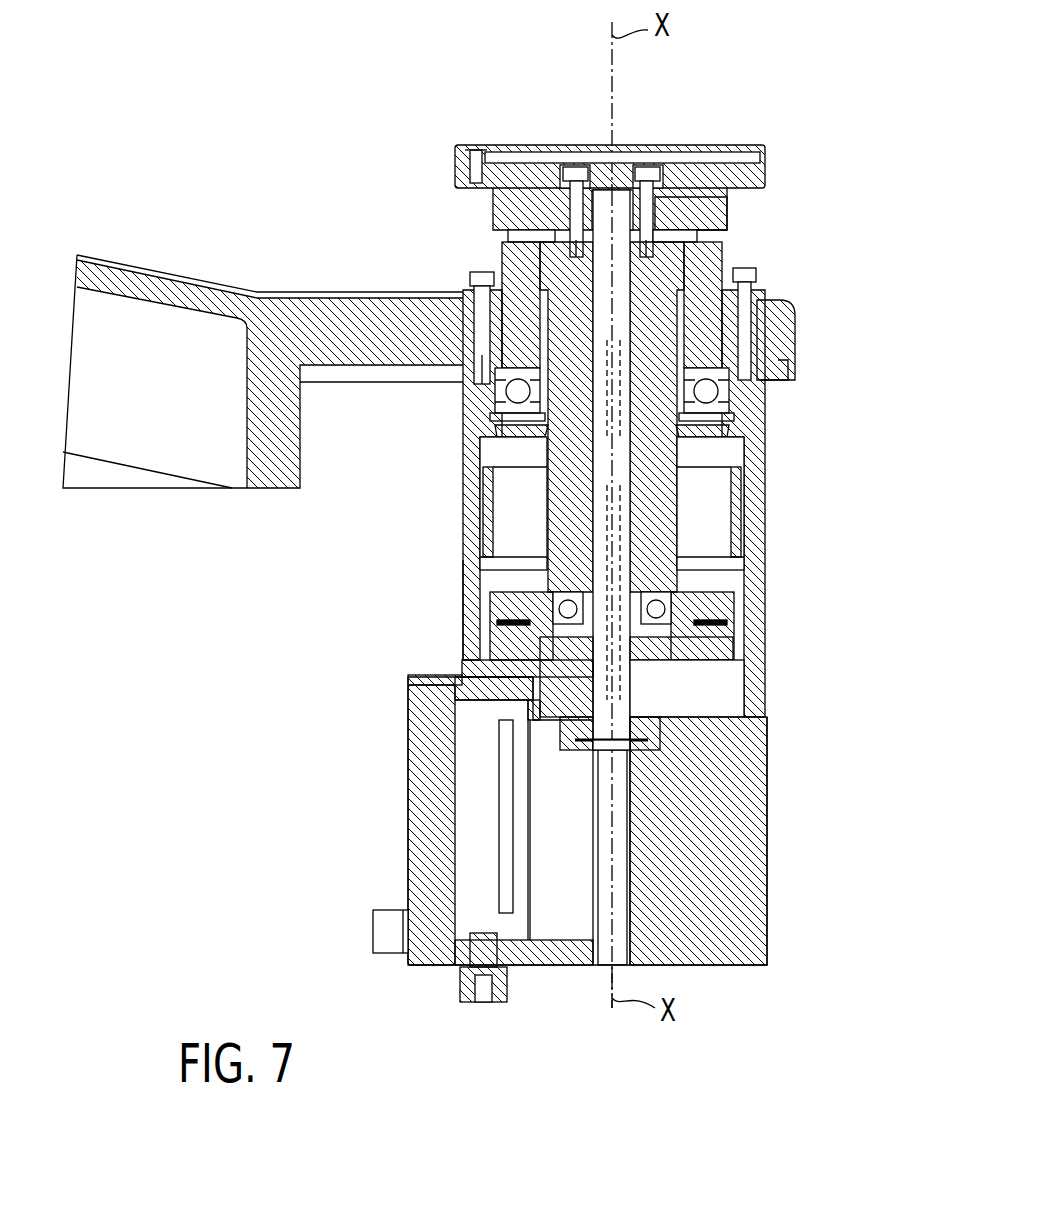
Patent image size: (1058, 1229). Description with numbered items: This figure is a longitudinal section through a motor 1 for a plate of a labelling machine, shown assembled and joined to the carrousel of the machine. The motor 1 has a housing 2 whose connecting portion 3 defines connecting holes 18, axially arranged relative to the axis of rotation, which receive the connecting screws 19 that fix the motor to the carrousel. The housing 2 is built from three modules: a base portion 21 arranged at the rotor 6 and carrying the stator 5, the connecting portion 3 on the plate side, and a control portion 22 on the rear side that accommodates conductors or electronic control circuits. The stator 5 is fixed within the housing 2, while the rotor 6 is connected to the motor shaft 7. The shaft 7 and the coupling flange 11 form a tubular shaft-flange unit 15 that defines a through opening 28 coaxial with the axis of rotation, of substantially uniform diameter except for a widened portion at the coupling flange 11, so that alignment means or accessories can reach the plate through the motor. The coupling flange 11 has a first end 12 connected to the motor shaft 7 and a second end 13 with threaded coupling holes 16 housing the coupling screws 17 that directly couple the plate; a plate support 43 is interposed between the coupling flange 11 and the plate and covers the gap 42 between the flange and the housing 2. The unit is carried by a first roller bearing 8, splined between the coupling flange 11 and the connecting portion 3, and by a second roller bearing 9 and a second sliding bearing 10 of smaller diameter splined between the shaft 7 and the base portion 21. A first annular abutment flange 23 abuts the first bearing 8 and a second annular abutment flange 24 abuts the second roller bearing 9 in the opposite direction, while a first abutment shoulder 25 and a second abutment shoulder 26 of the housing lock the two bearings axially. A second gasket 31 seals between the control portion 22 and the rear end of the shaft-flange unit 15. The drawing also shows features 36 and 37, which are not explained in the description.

The motor 1 is at (413, 560).
The housing 2 is at (758, 566).
The connecting portion 3 is at (757, 368).
The stator 5 is at (502, 505).
The rotor 6 is at (547, 490).
The motor shaft 7 is at (692, 480).
The first bearing 8 is at (512, 393).
The second roller bearing 9 is at (560, 605).
The second sliding bearing 10 is at (560, 678).
The coupling flange 11 is at (622, 232).
The first end 12 is at (525, 433).
The second end 13 is at (716, 228).
The shaft-flange unit 15 is at (553, 463).
The coupling holes 16 is at (504, 150).
The coupling screws 17 is at (569, 146).
The connecting holes 18 is at (742, 347).
The connecting screws 19 is at (741, 318).
The base portion 21 is at (470, 578).
The control portion 22 is at (738, 836).
The first annular abutment flange 23 is at (690, 436).
The second annular abutment flange 24 is at (641, 592).
The first abutment shoulder 25 is at (500, 366).
The second abutment shoulder 26 is at (695, 633).
The through opening 28 is at (625, 479).
The second gasket 31 is at (587, 743).
The slot 36 is at (508, 828).
The screw 37 is at (387, 927).
The gap 42 is at (682, 256).
The plate support 43 is at (692, 208).